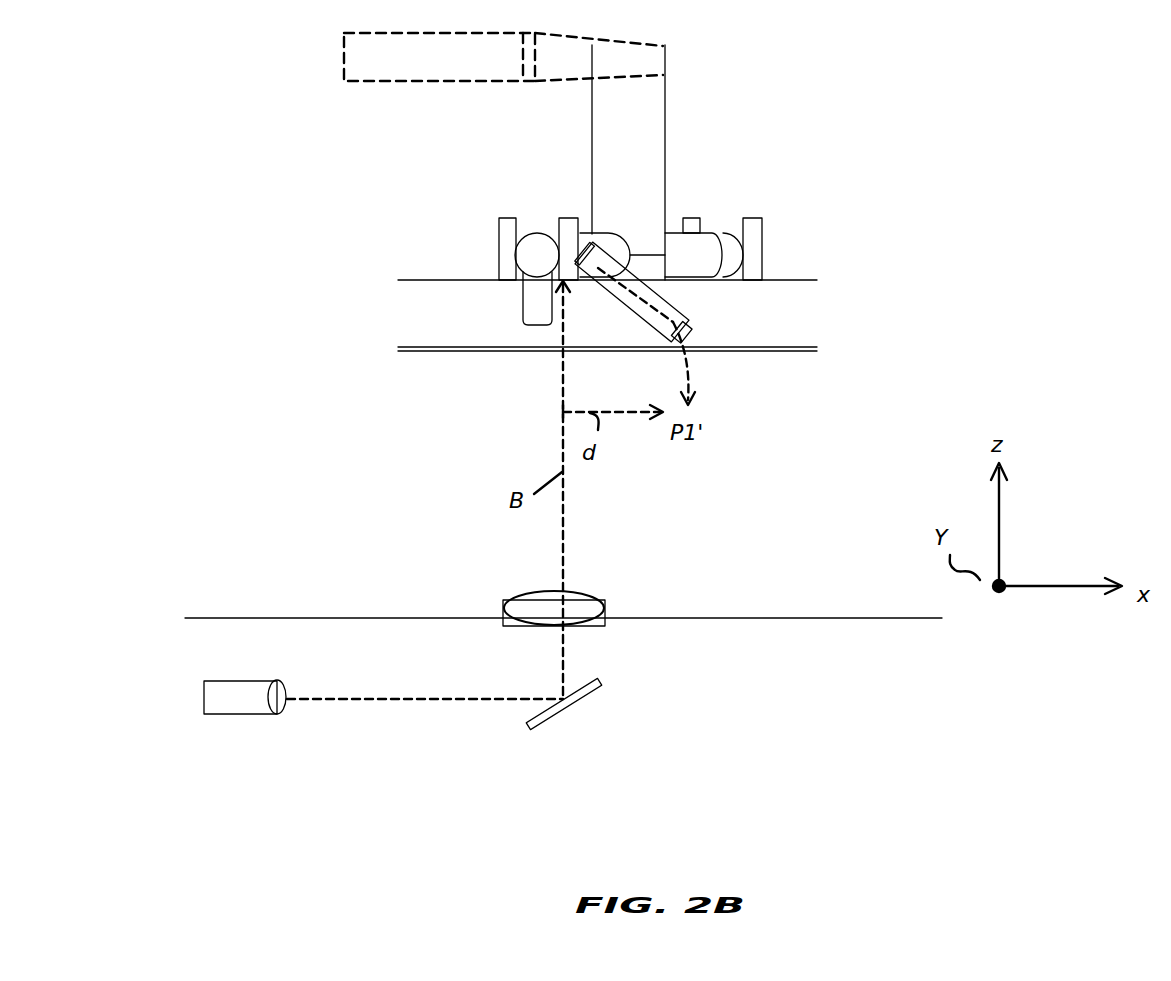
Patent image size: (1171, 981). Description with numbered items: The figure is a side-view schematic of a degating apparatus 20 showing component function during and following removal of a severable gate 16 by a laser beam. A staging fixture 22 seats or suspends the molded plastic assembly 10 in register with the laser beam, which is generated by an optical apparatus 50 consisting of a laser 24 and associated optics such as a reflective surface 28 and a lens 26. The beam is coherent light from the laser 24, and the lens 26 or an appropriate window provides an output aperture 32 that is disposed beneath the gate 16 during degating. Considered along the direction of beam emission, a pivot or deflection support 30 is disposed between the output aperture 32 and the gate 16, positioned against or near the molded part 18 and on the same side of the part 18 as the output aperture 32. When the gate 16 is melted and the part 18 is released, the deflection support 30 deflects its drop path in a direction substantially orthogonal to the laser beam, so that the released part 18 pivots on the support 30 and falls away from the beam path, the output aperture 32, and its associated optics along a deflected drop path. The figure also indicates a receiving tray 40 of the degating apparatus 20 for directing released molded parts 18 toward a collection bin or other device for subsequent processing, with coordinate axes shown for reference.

The molded assembly 10 is at (662, 133).
The gate 16 is at (567, 262).
The molded part 18 is at (673, 310).
The degating apparatus 20 is at (696, 187).
The staging fixture 22 is at (432, 310).
The laser 24 is at (383, 697).
The lens 26 is at (520, 598).
The reflective surface 28 is at (577, 698).
The deflection support 30 is at (580, 283).
The output aperture 32 is at (605, 603).
The receiving tray 40 is at (383, 80).
The optical apparatus 50 is at (273, 559).